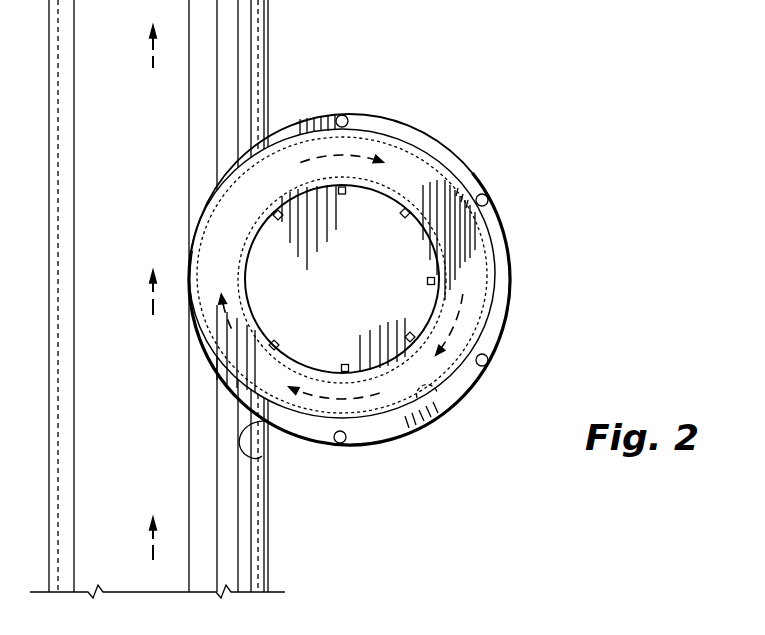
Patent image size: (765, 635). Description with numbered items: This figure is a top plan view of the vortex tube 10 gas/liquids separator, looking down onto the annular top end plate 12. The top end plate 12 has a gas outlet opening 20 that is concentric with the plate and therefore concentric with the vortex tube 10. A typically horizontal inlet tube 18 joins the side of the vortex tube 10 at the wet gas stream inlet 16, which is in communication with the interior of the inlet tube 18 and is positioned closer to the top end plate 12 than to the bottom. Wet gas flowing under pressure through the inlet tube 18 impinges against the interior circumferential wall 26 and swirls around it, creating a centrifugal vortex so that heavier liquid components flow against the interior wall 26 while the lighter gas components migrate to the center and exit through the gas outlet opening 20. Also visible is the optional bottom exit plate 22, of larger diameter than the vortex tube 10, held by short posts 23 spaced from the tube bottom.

The vortex tube 10 is at (497, 288).
The top end plate 12 is at (470, 258).
The wet gas stream inlet 16 is at (262, 456).
The inlet tube 18 is at (270, 54).
The gas outlet opening 20 is at (422, 225).
The bottom exit plate 22 is at (428, 142).
The short posts 23 is at (347, 113).
The interior circumferential wall 26 is at (427, 425).